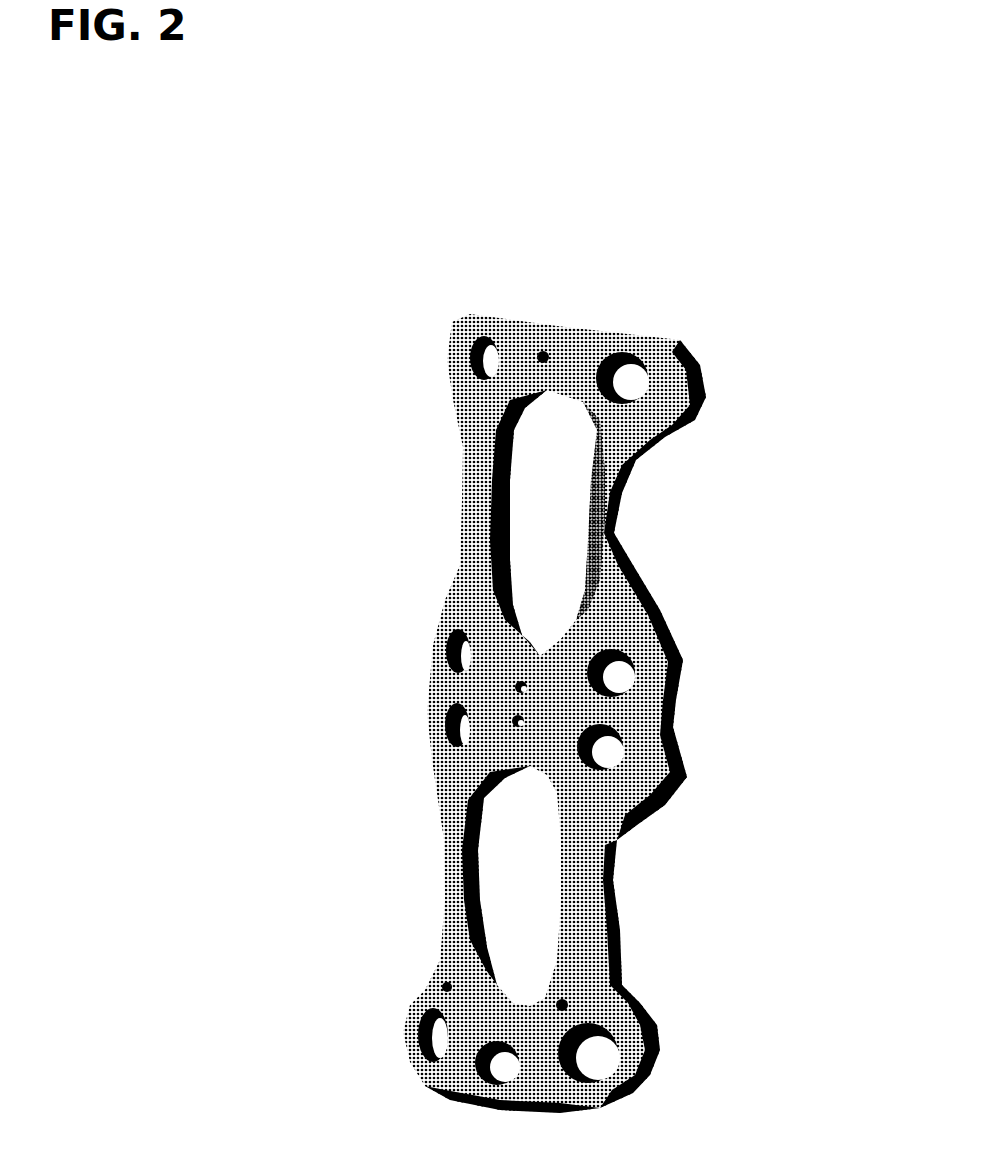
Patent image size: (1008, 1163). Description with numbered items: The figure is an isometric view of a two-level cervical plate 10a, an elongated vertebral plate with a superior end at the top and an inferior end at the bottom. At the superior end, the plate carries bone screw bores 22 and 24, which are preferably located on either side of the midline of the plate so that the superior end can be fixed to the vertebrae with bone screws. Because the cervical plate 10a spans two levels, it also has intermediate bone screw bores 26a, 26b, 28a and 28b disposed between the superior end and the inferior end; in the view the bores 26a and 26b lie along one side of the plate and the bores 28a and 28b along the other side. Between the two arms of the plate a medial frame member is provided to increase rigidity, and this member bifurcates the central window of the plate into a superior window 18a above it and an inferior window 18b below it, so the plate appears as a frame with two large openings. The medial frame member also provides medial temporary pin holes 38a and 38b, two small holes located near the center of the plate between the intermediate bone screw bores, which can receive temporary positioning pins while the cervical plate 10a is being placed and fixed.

The cervical plate 10a is at (454, 228).
The superior window 18a is at (532, 545).
The inferior window 18b is at (522, 892).
The bone screw bore 22 is at (482, 362).
The bone screw bore 24 is at (625, 378).
The intermediate bone screw bore 26a is at (452, 643).
The intermediate bone screw bore 26b is at (455, 728).
The intermediate bone screw bore 28a is at (618, 672).
The intermediate bone screw bore 28b is at (606, 748).
The medial temporary pin hole 38a is at (523, 683).
The medial temporary pin hole 38b is at (518, 718).